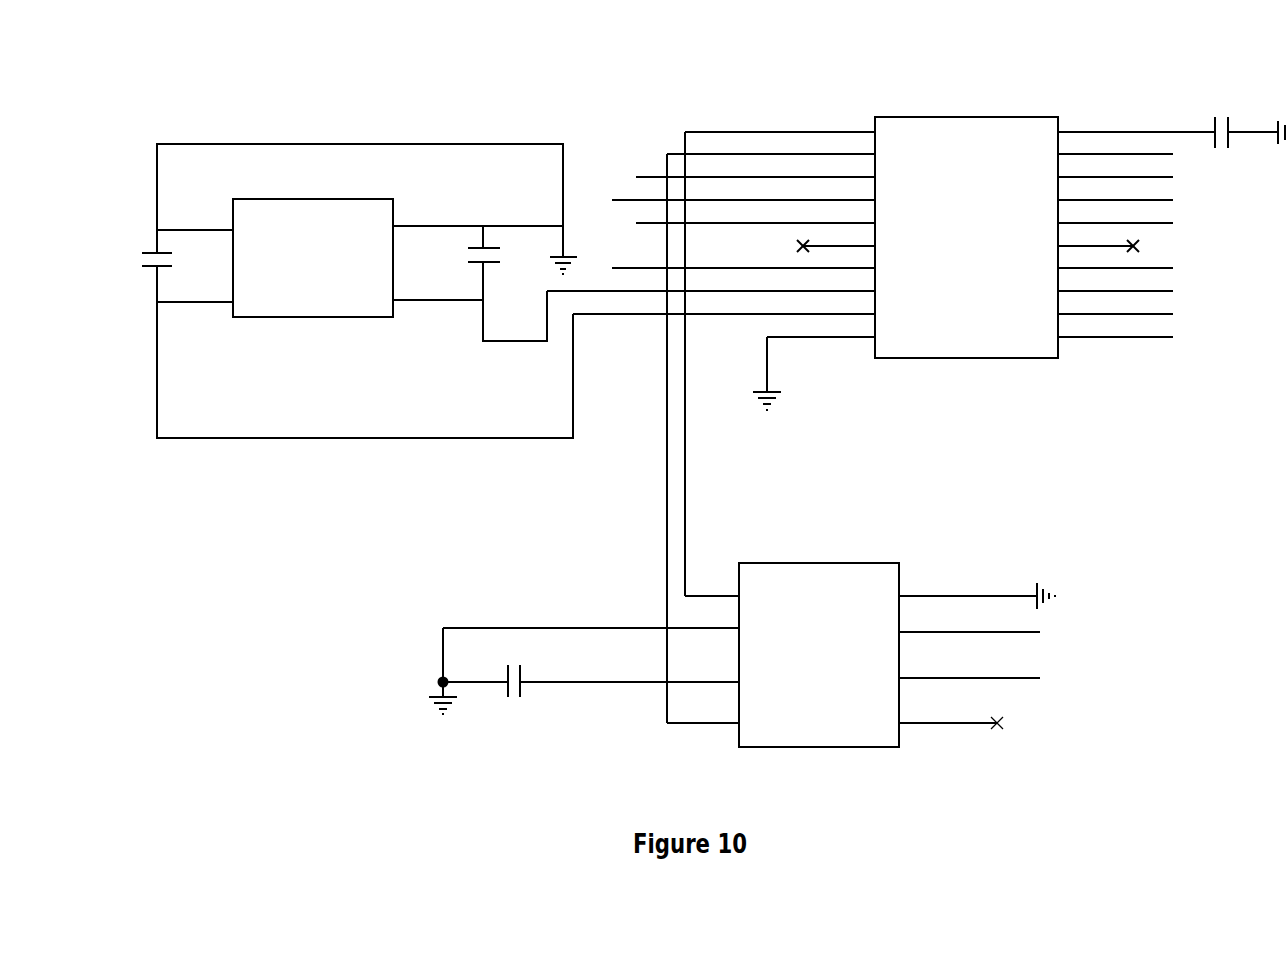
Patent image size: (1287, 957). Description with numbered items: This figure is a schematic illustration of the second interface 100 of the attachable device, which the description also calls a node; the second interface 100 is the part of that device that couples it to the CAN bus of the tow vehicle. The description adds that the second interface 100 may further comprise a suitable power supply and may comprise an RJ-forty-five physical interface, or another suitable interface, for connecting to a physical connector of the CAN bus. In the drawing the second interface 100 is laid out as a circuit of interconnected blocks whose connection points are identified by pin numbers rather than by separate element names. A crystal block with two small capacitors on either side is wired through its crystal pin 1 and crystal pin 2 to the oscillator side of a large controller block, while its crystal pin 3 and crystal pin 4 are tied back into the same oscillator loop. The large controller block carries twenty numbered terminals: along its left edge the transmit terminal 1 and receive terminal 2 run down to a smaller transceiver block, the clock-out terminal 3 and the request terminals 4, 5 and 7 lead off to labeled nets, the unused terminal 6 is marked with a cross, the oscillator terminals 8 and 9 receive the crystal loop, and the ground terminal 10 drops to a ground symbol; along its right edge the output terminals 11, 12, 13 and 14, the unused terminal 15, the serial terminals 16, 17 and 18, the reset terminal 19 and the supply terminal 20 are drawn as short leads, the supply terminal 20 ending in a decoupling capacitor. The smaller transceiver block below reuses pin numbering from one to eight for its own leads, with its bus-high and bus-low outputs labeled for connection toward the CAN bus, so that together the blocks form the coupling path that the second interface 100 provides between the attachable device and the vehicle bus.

The second interface 100 is at (686, 42).
The pin 1 is at (634, 357).
The pin 2 is at (634, 384).
The pin 3 is at (516, 423).
The pin 4 is at (516, 455).
The pin 5 is at (816, 466).
The pin 6 is at (921, 455).
The pin 7 is at (826, 443).
The pin 8 is at (792, 437).
The pin 9 is at (724, 308).
The pin 10 is at (821, 331).
The pin 11 is at (1115, 330).
The pin 12 is at (1115, 307).
The pin 13 is at (1115, 284).
The pin 14 is at (1115, 261).
The pin 15 is at (1095, 239).
The pin 16 is at (1115, 216).
The pin 17 is at (1115, 193).
The pin 18 is at (1115, 170).
The pin 19 is at (1115, 147).
The pin 20 is at (1136, 125).